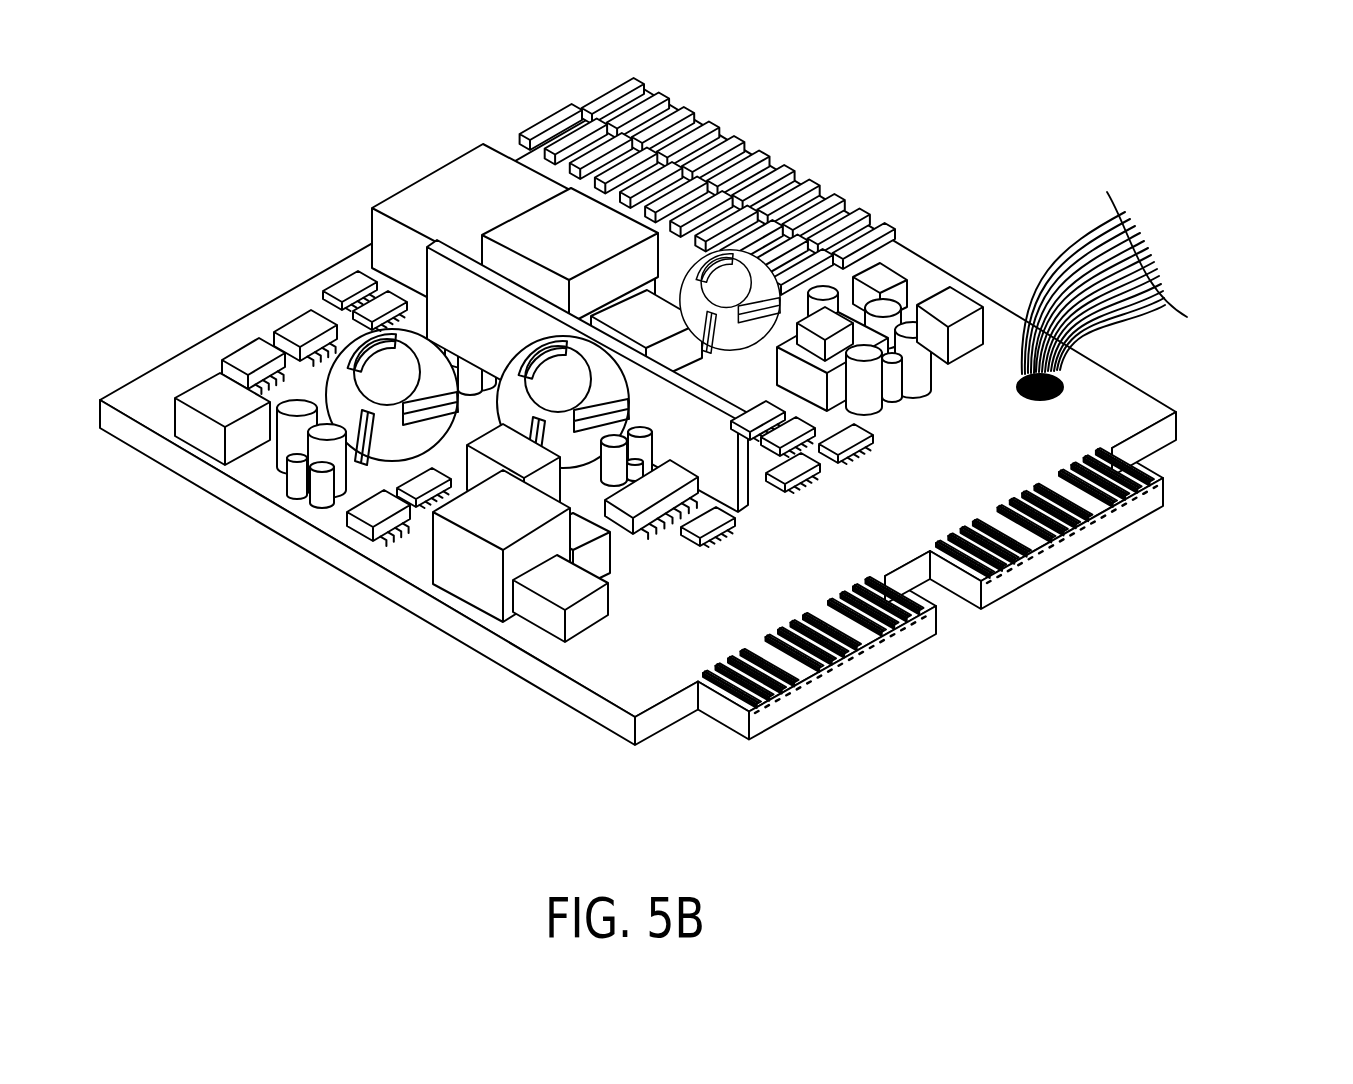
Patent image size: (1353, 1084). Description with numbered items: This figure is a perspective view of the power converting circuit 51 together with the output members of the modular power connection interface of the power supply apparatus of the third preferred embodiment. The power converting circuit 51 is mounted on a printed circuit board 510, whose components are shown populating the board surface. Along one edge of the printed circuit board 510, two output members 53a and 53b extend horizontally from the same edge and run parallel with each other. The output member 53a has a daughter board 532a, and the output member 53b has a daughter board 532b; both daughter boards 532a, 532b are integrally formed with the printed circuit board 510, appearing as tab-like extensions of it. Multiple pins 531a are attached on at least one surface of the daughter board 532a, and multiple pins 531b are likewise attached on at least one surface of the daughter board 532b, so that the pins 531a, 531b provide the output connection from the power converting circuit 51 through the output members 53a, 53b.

The power converting circuit 51 is at (703, 456).
The printed circuit board 510 is at (486, 638).
The output member 53a is at (840, 706).
The output member 53b is at (1118, 569).
The pins 531a is at (813, 687).
The pins 531b is at (1088, 538).
The daughter board 532a is at (873, 653).
The daughter board 532b is at (1007, 580).